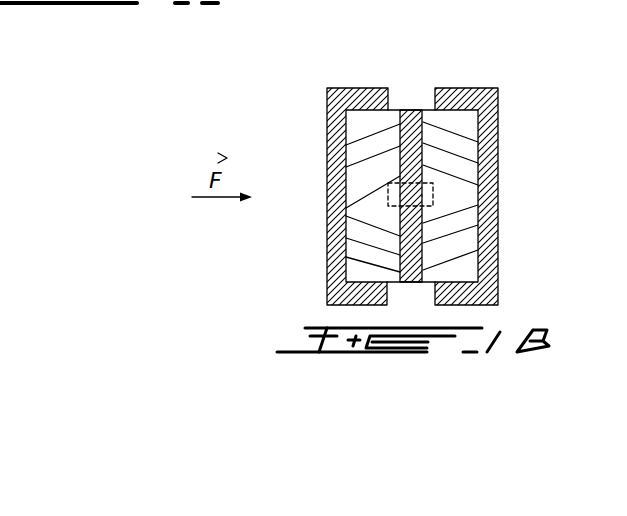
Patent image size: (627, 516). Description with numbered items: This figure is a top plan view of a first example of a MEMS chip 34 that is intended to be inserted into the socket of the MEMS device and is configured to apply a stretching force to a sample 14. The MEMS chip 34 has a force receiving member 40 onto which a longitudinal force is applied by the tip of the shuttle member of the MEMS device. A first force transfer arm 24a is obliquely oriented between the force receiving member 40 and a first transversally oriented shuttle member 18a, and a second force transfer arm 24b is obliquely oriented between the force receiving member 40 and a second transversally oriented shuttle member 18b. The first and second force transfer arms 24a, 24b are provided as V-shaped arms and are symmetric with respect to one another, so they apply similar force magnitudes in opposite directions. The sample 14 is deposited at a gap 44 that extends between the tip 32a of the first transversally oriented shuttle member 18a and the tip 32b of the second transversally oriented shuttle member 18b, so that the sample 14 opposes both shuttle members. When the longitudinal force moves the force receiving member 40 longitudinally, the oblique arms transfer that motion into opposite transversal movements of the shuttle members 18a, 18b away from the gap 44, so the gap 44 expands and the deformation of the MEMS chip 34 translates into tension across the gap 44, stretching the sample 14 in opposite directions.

The sample 14 is at (433, 206).
The first transversally oriented shuttle member 18a is at (413, 117).
The second transversally oriented shuttle member 18b is at (427, 242).
The first force transfer arm 24a is at (363, 153).
The second force transfer arm 24b is at (367, 226).
The tip of the first transversally oriented shuttle member 32a is at (372, 194).
The tip of the second transversally oriented shuttle member 32b is at (424, 207).
The MEMS chip 34 is at (483, 65).
The force receiving member 40 is at (347, 200).
The gap 44 is at (425, 177).